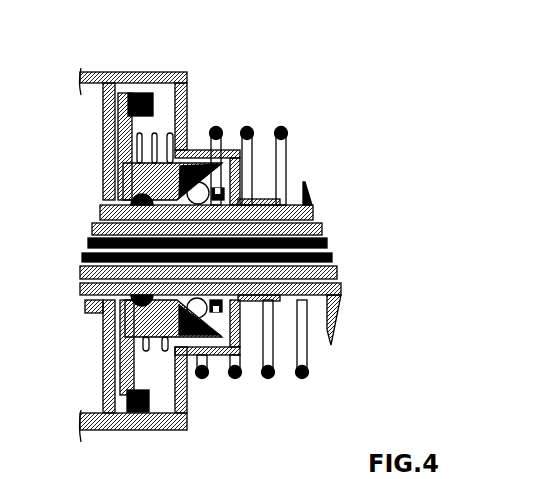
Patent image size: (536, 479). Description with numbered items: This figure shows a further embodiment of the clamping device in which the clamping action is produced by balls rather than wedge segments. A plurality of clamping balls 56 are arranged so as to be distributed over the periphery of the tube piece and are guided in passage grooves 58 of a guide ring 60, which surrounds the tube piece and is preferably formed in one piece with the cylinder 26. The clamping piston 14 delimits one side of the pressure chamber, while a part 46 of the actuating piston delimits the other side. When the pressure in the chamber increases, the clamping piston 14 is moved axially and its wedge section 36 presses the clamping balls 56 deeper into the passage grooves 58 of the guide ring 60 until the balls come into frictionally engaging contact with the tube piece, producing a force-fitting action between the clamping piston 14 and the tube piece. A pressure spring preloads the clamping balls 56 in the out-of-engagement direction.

The clamping piston 14 is at (127, 170).
The wedge section 36 is at (183, 178).
The clamping balls 56 is at (205, 186).
The part of the actuating piston 46 is at (207, 187).
The passage grooves 58 is at (212, 302).
The guide ring 60 is at (157, 343).
The cylinder 26 is at (120, 413).